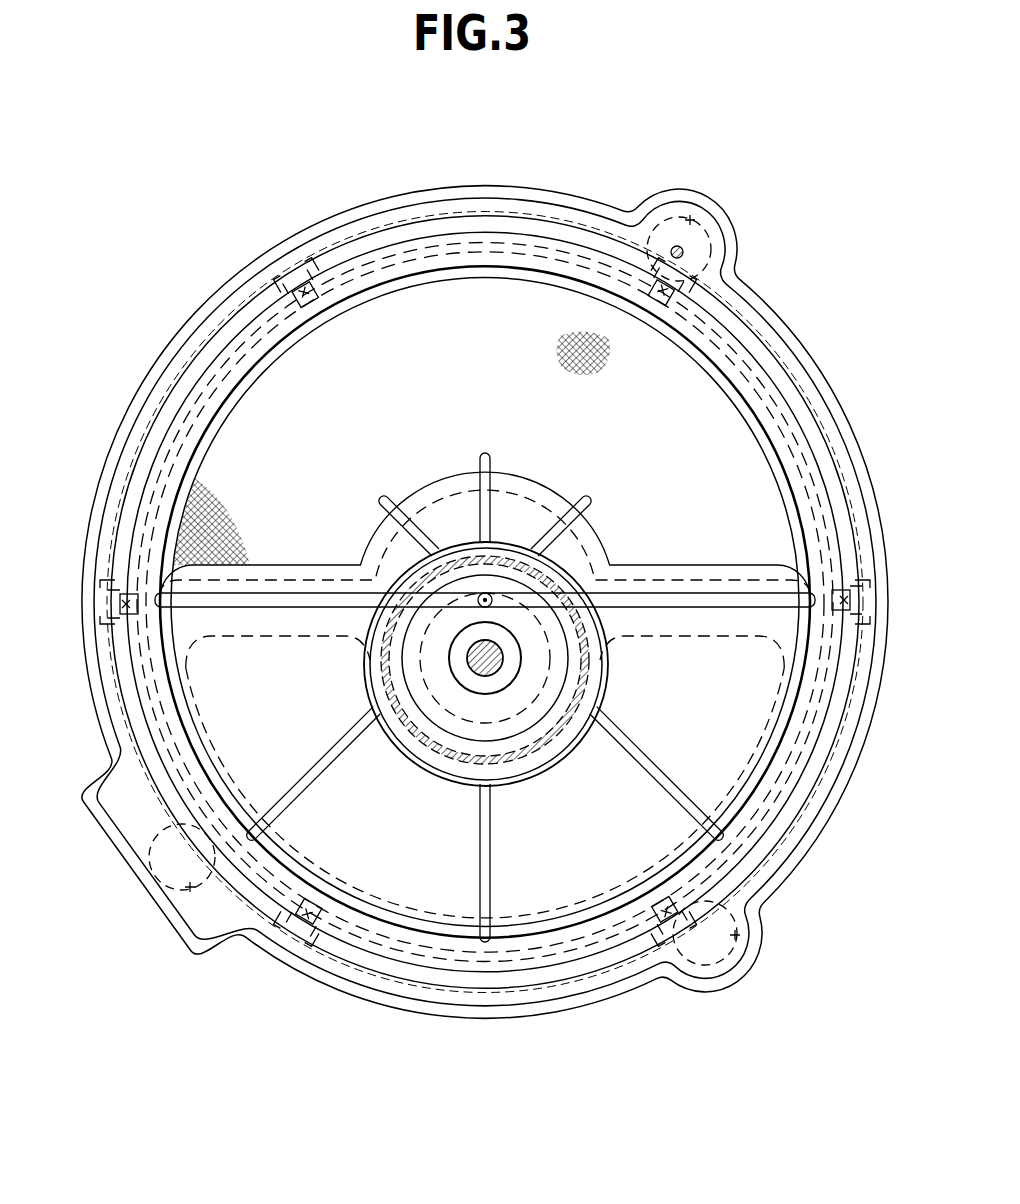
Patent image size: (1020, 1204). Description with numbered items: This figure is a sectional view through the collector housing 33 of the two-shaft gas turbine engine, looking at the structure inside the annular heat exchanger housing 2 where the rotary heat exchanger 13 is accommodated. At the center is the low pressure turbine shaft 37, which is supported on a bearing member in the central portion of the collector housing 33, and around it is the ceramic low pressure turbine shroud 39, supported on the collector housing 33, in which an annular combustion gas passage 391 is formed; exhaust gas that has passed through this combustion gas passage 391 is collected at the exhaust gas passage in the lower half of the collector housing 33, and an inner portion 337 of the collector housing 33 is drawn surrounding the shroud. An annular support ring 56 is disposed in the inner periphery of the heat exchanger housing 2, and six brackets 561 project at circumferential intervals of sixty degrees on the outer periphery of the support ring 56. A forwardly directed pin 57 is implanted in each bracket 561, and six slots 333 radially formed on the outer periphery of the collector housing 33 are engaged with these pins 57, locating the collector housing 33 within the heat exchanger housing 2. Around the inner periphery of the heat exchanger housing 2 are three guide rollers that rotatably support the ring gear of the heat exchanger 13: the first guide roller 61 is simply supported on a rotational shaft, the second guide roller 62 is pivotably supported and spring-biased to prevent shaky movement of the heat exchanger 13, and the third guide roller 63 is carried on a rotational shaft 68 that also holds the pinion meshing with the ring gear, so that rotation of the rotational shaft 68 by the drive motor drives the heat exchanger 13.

The heat exchanger housing 2 is at (504, 186).
The heat exchanger 13 is at (493, 416).
The collector housing 33 is at (388, 952).
The low pressure turbine shaft 37 is at (485, 672).
The low pressure turbine shroud 39 is at (405, 692).
The support ring 56 is at (338, 243).
The pin 57 is at (292, 258).
The first guide roller 61 is at (745, 931).
The second guide roller 62 is at (191, 884).
The third guide roller 63 is at (700, 212).
The rotational shaft 68 is at (685, 255).
The slot 333 is at (312, 268).
The inner ring 337 is at (462, 280).
The combustion gas passage 391 is at (426, 762).
The bracket 561 is at (308, 250).